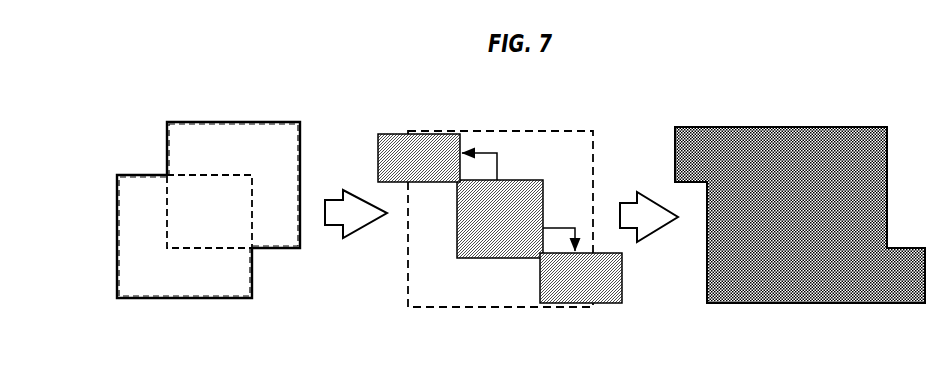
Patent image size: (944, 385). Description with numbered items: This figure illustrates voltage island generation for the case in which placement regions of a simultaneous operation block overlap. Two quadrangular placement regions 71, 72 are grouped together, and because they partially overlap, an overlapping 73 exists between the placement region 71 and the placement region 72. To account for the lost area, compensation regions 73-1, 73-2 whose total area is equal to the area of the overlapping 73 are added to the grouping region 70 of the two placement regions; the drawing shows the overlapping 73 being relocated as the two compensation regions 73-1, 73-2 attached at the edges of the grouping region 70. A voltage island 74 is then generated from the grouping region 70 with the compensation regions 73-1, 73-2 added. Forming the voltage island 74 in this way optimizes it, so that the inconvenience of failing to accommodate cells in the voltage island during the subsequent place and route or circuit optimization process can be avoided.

The grouping region 70 is at (229, 121).
The placement region 71 is at (139, 190).
The placement region 72 is at (279, 142).
The overlapping 73 is at (236, 233).
The compensation region 73-1 is at (421, 140).
The compensation region 73-2 is at (573, 305).
The voltage island 74 is at (789, 125).